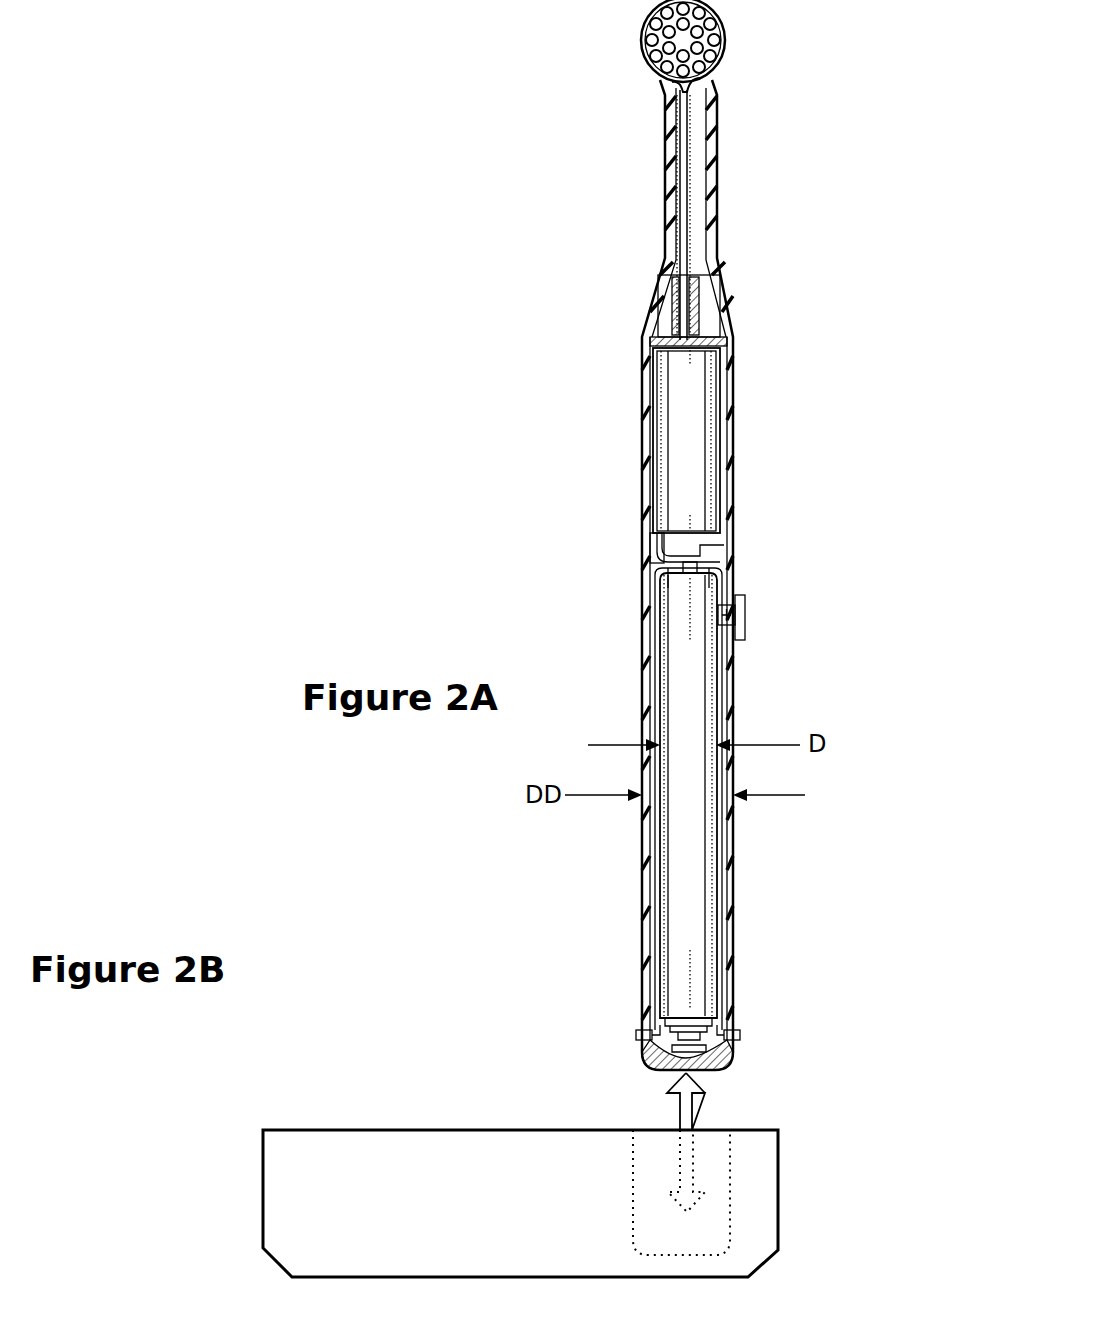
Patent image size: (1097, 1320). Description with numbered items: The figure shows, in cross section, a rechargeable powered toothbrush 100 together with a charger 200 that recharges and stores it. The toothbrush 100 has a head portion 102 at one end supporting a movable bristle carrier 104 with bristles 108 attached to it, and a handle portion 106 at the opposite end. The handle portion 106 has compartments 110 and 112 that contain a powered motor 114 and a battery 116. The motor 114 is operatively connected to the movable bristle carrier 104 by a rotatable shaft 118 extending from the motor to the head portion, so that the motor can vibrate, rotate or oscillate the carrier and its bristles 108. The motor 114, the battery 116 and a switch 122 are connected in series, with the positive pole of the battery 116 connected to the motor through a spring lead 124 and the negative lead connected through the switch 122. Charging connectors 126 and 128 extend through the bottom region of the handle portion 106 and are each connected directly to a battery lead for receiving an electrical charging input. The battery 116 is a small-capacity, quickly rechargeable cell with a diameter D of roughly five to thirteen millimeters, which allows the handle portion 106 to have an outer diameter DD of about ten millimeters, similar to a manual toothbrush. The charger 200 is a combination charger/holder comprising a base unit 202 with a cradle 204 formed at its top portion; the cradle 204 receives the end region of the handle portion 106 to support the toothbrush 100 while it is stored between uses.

In FIG. 2A, the rechargeable powered toothbrush 100 is at (514, 362).
In FIG. 2A, the head portion 102 is at (635, 45).
In FIG. 2A, the movable bristle carrier 104 is at (735, 25).
In FIG. 2A, the handle portion 106 is at (610, 864).
In FIG. 2A, the bristles 108 is at (725, 78).
In FIG. 2A, the compartment 110 is at (712, 546).
In FIG. 2A, the compartment 112 is at (725, 915).
In FIG. 2A, the powered motor 114 is at (700, 455).
In FIG. 2A, the battery 116 is at (700, 700).
In FIG. 2A, the rotatable shaft 118 is at (688, 225).
In FIG. 2A, the switch 122 is at (748, 612).
In FIG. 2A, the spring lead 124 is at (663, 548).
In FIG. 2A, the charging connector 126 is at (636, 1035).
In FIG. 2A, the charging connector 128 is at (740, 1033).
In FIG. 2B, the charger 200 is at (310, 1033).
In FIG. 2B, the base unit 202 is at (338, 1193).
In FIG. 2B, the cradle 204 is at (650, 1110).